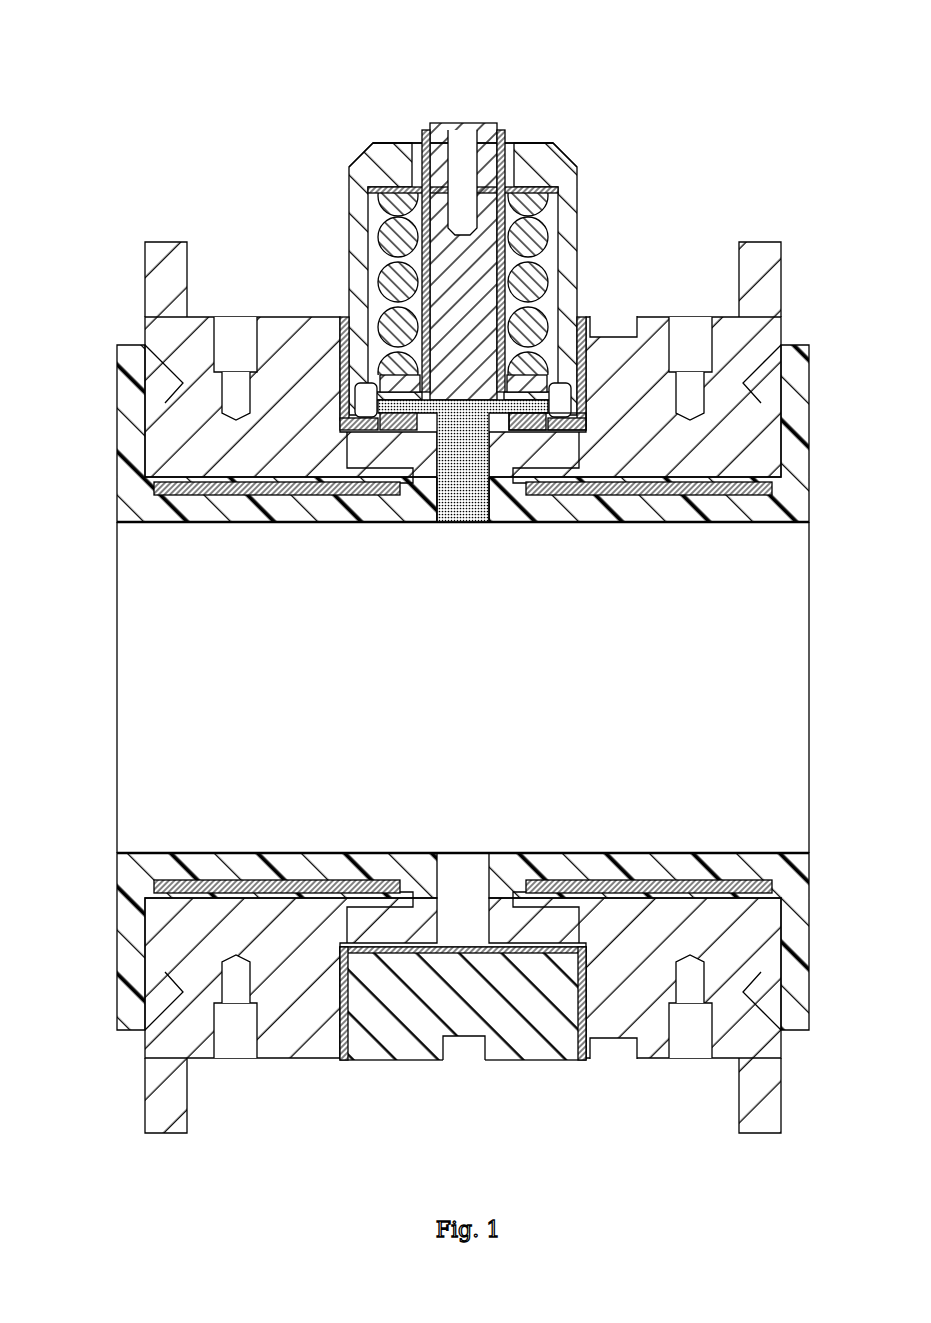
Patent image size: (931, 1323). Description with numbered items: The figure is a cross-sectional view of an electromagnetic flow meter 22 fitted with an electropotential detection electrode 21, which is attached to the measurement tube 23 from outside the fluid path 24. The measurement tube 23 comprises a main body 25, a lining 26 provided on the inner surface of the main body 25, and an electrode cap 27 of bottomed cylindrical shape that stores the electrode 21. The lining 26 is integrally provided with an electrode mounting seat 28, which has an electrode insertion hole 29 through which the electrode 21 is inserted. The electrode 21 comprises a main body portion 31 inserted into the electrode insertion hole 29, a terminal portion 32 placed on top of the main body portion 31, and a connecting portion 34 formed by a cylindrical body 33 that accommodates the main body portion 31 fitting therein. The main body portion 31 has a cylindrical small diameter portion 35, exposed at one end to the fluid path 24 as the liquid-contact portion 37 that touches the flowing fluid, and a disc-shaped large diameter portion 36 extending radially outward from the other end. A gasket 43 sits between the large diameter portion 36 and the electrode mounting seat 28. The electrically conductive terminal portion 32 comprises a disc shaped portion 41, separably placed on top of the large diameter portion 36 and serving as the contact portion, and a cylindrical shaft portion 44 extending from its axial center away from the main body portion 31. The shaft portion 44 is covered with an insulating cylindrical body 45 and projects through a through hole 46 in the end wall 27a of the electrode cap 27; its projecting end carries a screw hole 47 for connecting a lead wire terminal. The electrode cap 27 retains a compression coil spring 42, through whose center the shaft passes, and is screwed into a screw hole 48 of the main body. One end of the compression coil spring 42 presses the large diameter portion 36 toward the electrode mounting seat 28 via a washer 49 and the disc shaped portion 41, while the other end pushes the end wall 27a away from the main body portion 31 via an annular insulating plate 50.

The electropotential detection electrode 21 is at (462, 537).
The electromagnetic flow meter 22 is at (128, 70).
The measurement tube 23 is at (159, 230).
The fluid path 24 is at (160, 640).
The main body 25 is at (140, 330).
The lining 26 is at (118, 396).
The electrode cap 27 is at (349, 205).
The end wall 27a is at (400, 145).
The electrode mounting seat 28 is at (340, 480).
The electrode insertion hole 29 is at (478, 522).
The main body portion 31 is at (547, 612).
The terminal portion 32 is at (484, 124).
The cylindrical body 33 is at (380, 425).
The connecting portion 34 is at (352, 402).
The small diameter portion 35 is at (540, 428).
The large diameter portion 36 is at (578, 435).
The liquid-contact portion 37 is at (450, 522).
The disc shaped portion 41 is at (582, 317).
The compression coil spring 42 is at (540, 222).
The gasket 43 is at (380, 470).
The shaft portion 44 is at (465, 278).
The cylindrical body 45 is at (555, 185).
The through hole 46 is at (377, 162).
The screw hole 47 is at (467, 123).
The screw hole 48 is at (360, 390).
The washer 49 is at (600, 330).
The annular insulating plate 50 is at (548, 232).